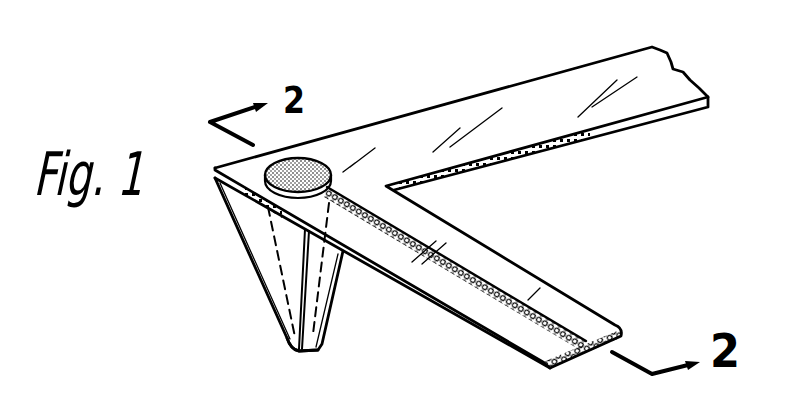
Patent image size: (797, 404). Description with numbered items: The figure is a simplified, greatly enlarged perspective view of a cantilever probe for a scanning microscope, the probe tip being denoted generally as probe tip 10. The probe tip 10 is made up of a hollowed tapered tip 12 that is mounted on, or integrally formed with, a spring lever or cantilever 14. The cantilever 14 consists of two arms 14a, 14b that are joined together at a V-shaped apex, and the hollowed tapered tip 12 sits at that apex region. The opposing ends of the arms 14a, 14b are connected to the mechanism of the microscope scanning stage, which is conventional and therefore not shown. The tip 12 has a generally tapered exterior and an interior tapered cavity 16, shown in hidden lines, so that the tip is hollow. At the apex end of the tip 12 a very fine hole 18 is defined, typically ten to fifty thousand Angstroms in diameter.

The probe tip 10 is at (419, 88).
The hollowed tapered tip 12 is at (244, 246).
The cantilever 14 is at (635, 141).
The arm 14a is at (547, 284).
The arm 14b is at (509, 88).
The interior tapered cavity 16 is at (279, 276).
The hole 18 is at (297, 352).